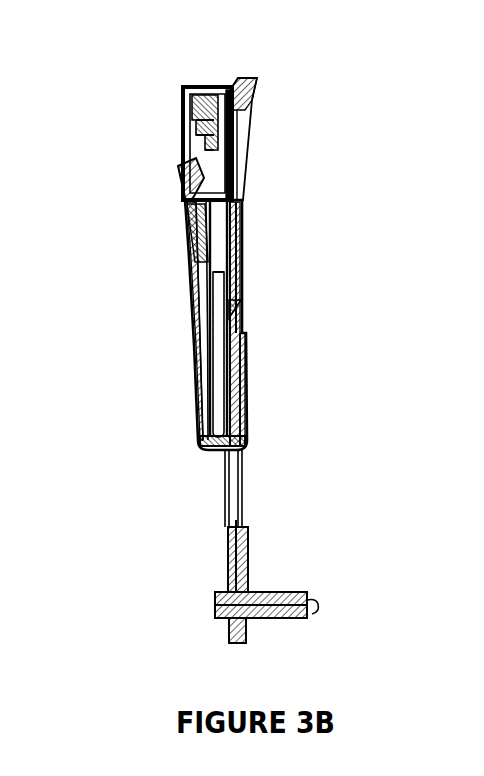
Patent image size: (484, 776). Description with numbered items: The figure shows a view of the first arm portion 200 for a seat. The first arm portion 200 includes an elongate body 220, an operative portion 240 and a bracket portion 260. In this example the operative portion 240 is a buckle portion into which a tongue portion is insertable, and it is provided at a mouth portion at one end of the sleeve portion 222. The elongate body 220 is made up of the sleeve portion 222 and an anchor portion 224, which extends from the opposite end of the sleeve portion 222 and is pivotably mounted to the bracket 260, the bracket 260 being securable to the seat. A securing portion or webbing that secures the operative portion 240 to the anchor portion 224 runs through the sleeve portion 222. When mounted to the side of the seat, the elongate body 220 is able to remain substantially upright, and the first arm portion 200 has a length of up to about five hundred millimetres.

The first arm portion 200 is at (103, 162).
The elongate body 220 is at (243, 423).
The sleeve portion 222 is at (237, 297).
The anchor portion 224 is at (232, 552).
The operative portion 240 is at (185, 88).
The bracket portion 260 is at (317, 613).